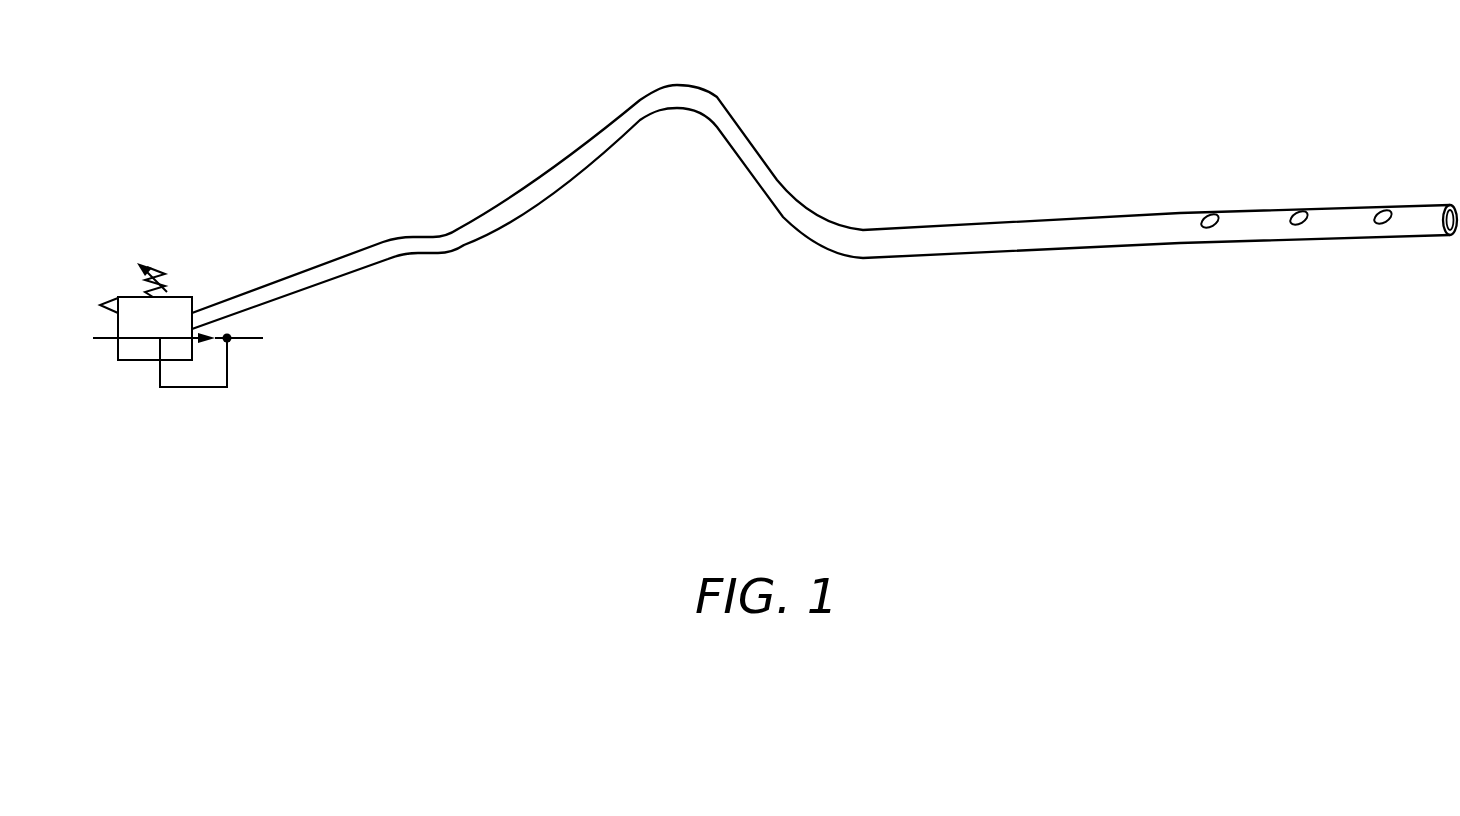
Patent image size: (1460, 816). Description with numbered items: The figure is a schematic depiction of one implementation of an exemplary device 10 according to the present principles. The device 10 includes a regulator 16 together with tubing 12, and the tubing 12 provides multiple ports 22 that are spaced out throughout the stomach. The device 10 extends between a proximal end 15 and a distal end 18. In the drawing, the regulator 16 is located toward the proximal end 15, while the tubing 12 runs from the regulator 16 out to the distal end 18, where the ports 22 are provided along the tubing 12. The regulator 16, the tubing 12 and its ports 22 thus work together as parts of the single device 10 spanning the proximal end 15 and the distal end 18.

The device 10 is at (1365, 83).
The tubing 12 is at (783, 183).
The proximal end 15 is at (225, 274).
The regulator 16 is at (130, 297).
The distal end 18 is at (1440, 205).
The ports 22 is at (1388, 207).